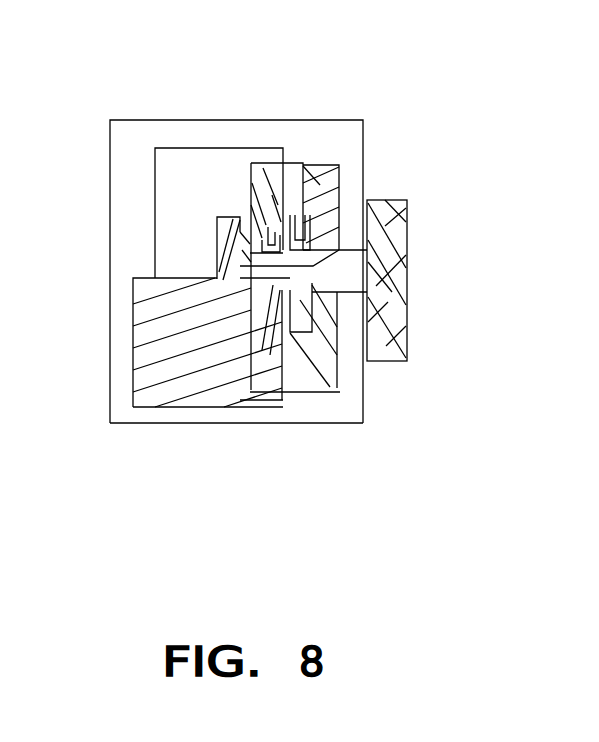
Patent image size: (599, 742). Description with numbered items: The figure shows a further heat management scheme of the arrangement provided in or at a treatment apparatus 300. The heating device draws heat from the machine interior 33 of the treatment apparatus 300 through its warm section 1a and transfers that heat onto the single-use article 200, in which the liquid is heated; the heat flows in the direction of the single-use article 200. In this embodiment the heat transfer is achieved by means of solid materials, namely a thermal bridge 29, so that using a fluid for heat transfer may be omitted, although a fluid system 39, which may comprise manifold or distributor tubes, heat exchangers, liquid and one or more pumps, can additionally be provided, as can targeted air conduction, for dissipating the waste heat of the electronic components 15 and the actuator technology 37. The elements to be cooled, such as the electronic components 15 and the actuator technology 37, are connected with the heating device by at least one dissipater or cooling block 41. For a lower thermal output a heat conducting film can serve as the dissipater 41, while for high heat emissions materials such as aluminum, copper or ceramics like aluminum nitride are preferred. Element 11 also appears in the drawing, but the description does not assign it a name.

The machine interior 33 is at (126, 205).
The treatment apparatus 300 is at (223, 425).
The actuator technology 37 is at (308, 376).
The fluid system 39 is at (302, 164).
The dissipater or cooling block 41 is at (305, 165).
The thermal bridge 29 is at (222, 217).
The electronic components 15 is at (162, 377).
The hook member 11 is at (282, 400).
The single-use article 200 is at (500, 238).
The warm section 1a is at (410, 327).